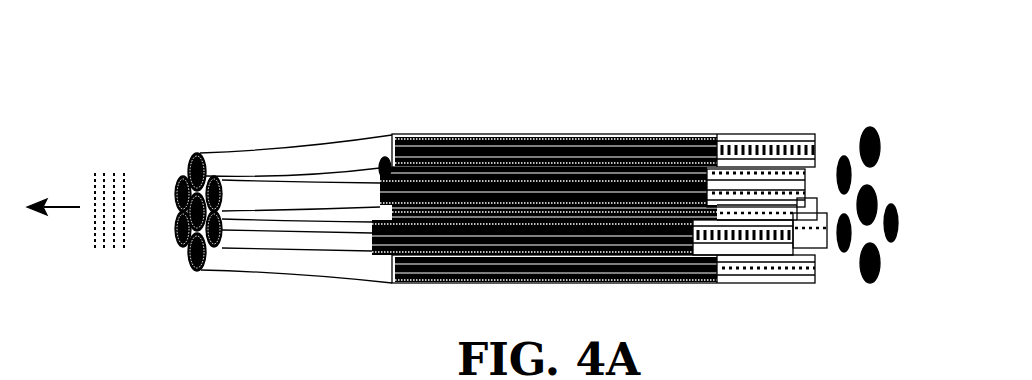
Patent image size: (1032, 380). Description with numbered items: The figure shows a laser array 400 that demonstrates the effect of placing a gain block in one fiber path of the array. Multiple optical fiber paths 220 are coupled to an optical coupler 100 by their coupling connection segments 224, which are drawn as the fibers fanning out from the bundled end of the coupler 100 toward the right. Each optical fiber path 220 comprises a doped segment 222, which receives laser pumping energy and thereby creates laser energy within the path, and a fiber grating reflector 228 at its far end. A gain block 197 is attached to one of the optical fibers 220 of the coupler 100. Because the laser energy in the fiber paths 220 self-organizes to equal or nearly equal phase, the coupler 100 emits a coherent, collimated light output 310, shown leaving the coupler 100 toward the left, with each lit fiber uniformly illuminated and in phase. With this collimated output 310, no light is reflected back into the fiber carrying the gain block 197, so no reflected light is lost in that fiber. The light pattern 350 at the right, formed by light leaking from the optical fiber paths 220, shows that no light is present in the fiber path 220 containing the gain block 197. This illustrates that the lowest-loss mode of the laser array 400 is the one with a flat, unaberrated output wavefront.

The laser array 400 is at (481, 16).
The collimated light output 310 is at (68, 157).
The optical coupler 100 is at (215, 133).
The coupling connection segments 224 is at (325, 125).
The gain block 197 is at (392, 163).
The doped segments 222 is at (483, 122).
The optical fiber paths 220 is at (582, 78).
The fiber grating reflectors 228 is at (745, 122).
The light pattern 350 is at (852, 287).